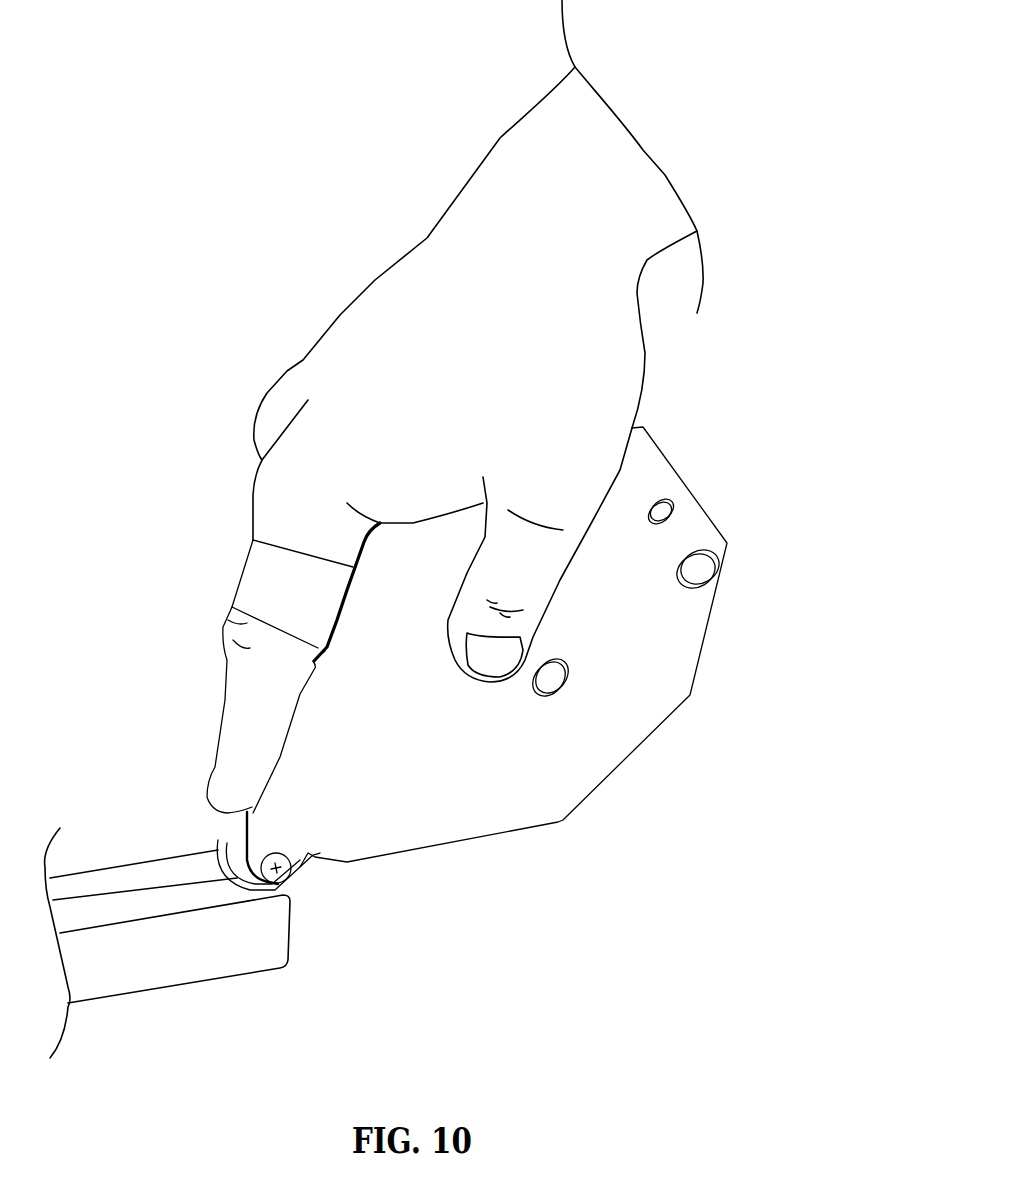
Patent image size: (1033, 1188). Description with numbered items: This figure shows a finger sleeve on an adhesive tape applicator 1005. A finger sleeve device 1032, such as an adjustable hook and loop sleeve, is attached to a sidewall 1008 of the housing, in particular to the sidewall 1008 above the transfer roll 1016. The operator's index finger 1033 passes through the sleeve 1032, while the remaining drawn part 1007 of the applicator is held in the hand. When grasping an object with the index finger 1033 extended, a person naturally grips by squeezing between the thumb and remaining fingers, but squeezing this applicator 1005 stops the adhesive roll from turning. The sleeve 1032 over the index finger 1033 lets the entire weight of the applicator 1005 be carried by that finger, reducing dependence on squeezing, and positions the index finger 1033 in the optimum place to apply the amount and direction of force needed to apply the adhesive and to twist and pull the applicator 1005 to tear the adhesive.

The applicator 1005 is at (762, 610).
The mounting plate 1007 is at (405, 788).
The sidewall 1008 is at (222, 773).
The transfer roll 1016 is at (218, 840).
The finger sleeve device 1032 is at (252, 590).
The index finger 1033 is at (280, 515).